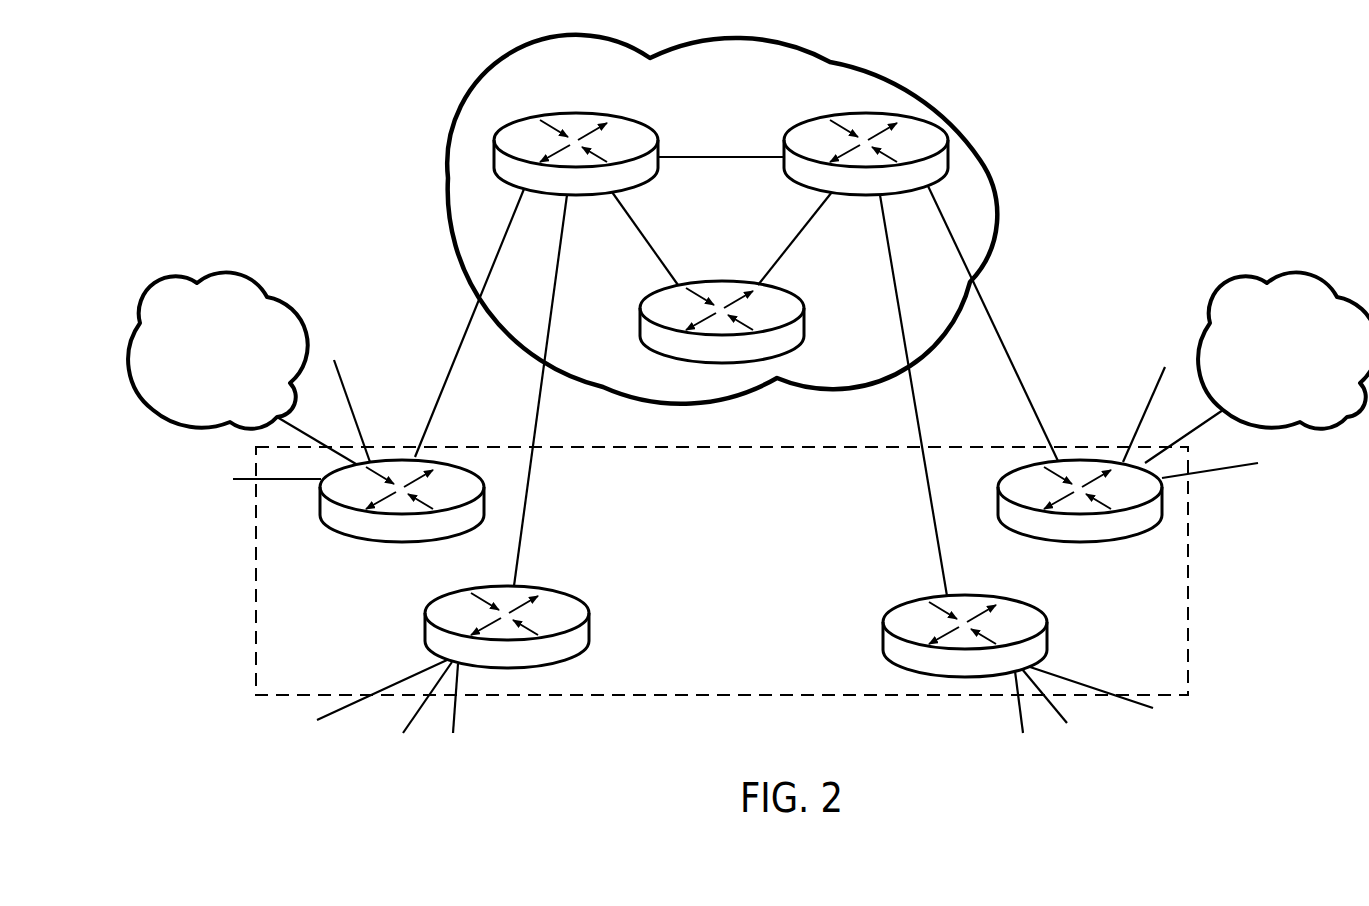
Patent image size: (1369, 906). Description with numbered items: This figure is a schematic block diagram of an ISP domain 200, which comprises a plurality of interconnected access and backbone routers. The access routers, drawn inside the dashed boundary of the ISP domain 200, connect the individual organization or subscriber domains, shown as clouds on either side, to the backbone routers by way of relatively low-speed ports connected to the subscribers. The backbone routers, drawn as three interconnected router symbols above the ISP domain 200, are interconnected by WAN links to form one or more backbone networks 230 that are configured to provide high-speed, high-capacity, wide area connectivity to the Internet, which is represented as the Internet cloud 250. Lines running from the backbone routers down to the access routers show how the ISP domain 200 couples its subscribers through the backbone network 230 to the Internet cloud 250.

The ISP domain 200 is at (722, 571).
The backbone network 230 is at (724, 229).
The Internet cloud 250 is at (722, 219).